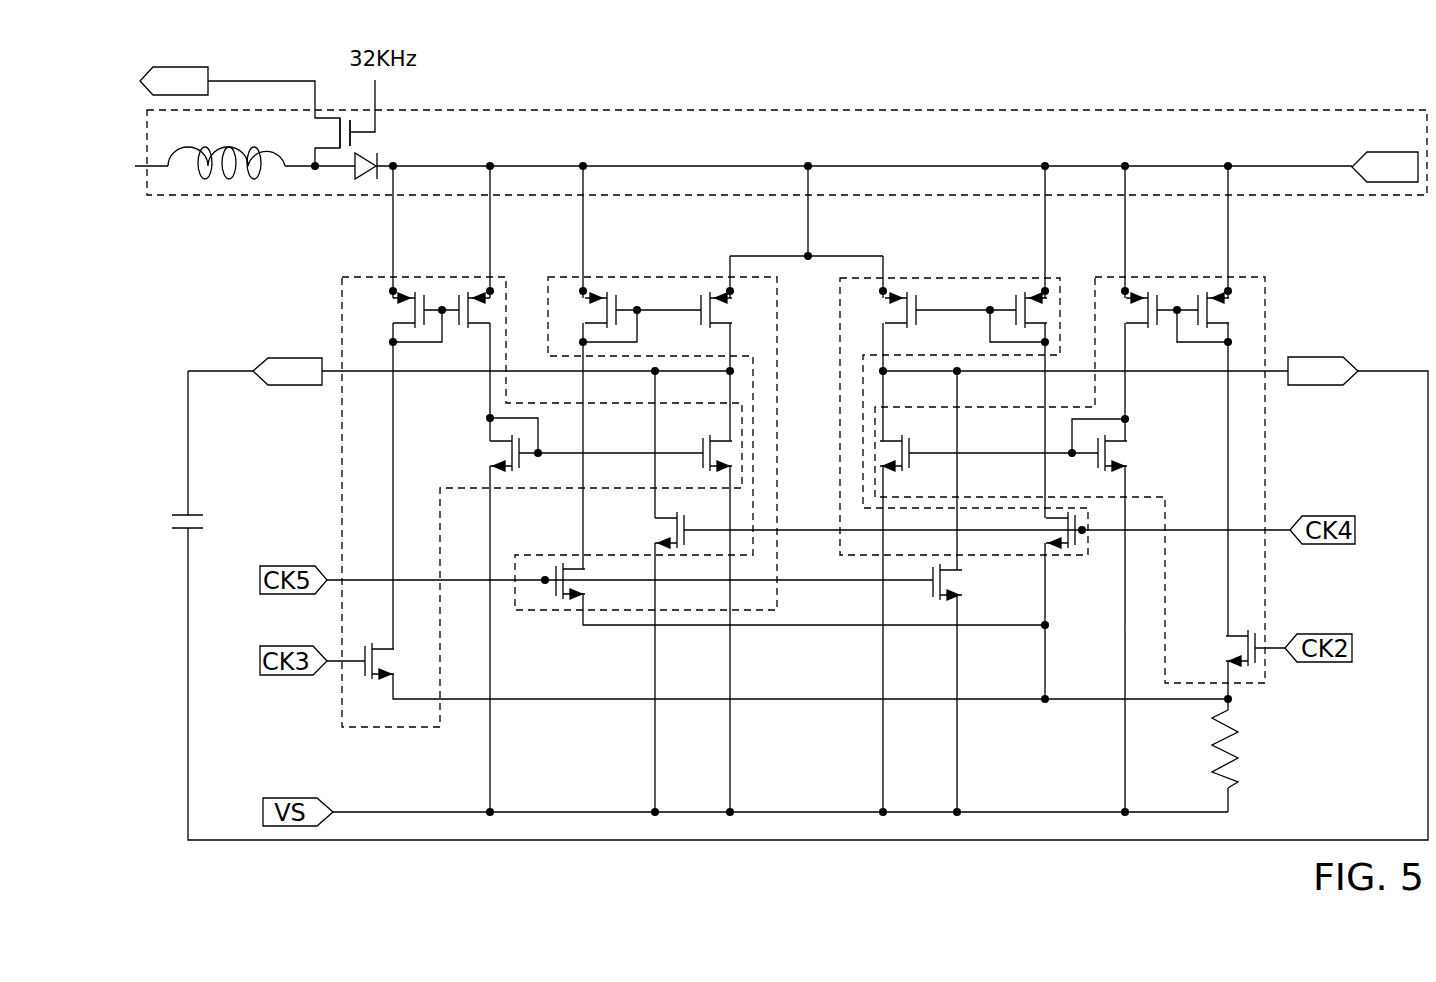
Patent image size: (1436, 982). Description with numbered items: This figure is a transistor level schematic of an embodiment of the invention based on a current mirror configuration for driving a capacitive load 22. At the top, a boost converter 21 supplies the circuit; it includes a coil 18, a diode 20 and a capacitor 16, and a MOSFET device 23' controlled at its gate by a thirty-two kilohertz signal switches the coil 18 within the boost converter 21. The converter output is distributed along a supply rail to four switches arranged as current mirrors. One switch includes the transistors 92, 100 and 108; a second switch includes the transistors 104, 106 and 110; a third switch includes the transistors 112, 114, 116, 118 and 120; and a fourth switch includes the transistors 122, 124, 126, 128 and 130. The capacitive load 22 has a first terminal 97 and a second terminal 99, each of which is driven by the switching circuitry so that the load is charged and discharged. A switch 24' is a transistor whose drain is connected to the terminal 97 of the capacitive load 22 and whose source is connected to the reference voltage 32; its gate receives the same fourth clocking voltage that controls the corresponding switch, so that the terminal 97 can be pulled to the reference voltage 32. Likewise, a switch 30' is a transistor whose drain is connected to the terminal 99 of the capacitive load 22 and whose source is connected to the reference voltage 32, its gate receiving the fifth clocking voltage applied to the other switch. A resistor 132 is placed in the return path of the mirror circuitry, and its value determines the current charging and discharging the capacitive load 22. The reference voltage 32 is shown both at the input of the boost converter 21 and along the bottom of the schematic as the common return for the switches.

The reference voltage 32 is at (178, 66).
The MOSFET device 23' is at (296, 132).
The diode 20 is at (362, 153).
The coil 18 is at (258, 182).
The boost converter 21 is at (715, 108).
The capacitor 16 is at (1352, 156).
The transistor 114 is at (405, 310).
The transistor 116 is at (474, 312).
The transistor 108 is at (623, 298).
The transistor 100 is at (706, 328).
The transistor 106 is at (912, 300).
The transistor 110 is at (1037, 314).
The transistor 126 is at (1157, 305).
The transistor 124 is at (1220, 315).
The transistor 118 is at (497, 452).
The transistor 120 is at (710, 440).
The transistor 130 is at (910, 447).
The transistor 128 is at (1125, 457).
The switch 24' is at (643, 522).
The transistor 104 is at (1048, 535).
The transistor 92 is at (583, 585).
The switch 30' is at (964, 591).
The transistor 112 is at (378, 660).
The transistor 122 is at (1232, 650).
The resistor 132 is at (1240, 757).
The capacitive load 22 is at (196, 512).
The terminal 97 is at (258, 358).
The terminal 99 is at (1320, 357).